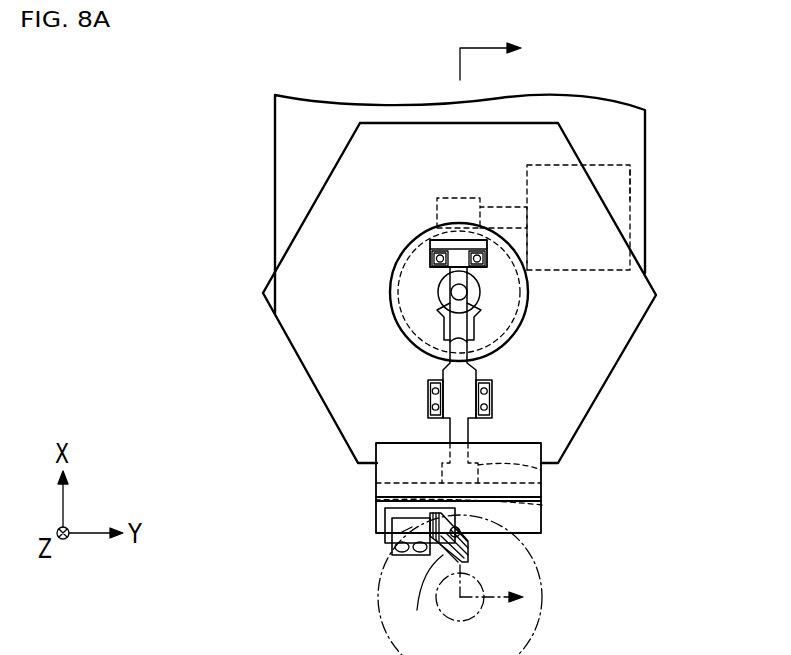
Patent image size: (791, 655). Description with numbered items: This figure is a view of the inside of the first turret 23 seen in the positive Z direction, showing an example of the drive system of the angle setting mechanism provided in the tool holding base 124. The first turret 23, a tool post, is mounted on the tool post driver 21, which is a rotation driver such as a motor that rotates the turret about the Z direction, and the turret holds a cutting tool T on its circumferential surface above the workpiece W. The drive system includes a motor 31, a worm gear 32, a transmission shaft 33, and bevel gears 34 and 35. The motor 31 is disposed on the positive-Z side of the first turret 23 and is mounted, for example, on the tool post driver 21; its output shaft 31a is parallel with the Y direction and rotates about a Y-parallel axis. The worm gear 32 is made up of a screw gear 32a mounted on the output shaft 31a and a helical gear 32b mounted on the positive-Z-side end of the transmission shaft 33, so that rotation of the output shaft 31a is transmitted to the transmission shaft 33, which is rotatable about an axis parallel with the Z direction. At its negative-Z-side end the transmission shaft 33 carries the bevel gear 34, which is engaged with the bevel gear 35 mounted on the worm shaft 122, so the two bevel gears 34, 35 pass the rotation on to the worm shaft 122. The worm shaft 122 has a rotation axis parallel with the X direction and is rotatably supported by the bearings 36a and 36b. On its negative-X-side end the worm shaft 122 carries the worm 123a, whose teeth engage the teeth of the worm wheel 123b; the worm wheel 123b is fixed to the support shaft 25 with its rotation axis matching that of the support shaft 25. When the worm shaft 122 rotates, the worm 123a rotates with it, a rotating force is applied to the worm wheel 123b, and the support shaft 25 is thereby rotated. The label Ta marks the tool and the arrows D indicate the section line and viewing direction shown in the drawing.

The tool post driver 21 is at (637, 133).
The first turret 23 is at (593, 205).
The motor 31 is at (619, 177).
The output shaft 31a is at (506, 213).
The worm gear 32 is at (427, 53).
The screw gear 32a is at (450, 213).
The helical gear 32b is at (407, 253).
The transmission shaft 33 is at (468, 294).
The bevel gear 34 is at (440, 293).
The bevel gear 35 is at (422, 322).
The bearing 36a is at (487, 262).
The bearing 36b is at (492, 390).
The worm shaft 122 is at (463, 370).
The worm 123a is at (542, 466).
The worm wheel 123b is at (542, 505).
The tool holding base 124 is at (377, 480).
The support shaft 25 is at (378, 493).
The cutting tool T is at (472, 543).
The workpiece W is at (372, 598).
The tool axis Ta is at (425, 599).
The direction D is at (494, 327).